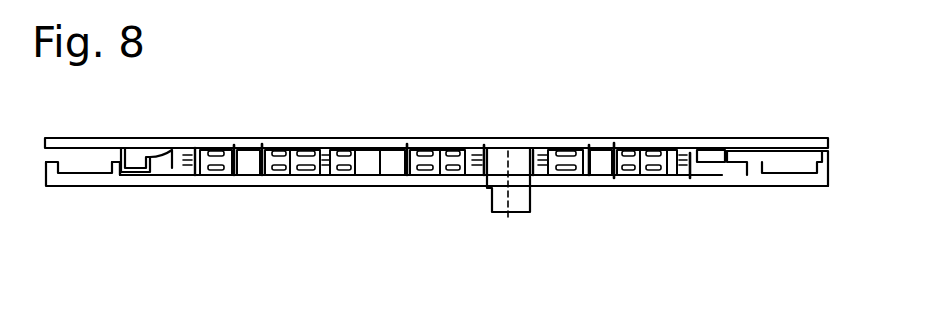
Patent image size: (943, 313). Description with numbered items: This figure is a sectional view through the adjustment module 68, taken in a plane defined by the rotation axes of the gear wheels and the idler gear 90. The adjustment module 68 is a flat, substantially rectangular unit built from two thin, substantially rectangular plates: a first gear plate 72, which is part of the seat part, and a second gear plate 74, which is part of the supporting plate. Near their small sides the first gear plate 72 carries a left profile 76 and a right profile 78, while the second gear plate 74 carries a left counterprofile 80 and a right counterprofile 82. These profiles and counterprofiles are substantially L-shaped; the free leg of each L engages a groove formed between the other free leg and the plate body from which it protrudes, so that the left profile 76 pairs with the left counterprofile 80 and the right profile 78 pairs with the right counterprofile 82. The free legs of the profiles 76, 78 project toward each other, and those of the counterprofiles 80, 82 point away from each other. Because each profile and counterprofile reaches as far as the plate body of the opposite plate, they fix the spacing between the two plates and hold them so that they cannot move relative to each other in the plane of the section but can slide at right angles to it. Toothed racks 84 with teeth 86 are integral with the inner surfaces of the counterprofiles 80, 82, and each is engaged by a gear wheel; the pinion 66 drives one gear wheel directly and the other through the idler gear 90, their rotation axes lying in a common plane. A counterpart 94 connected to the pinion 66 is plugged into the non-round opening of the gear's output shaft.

The pinion 66 is at (488, 138).
The adjustment module 68 is at (798, 90).
The first gear plate 72 is at (85, 177).
The second gear plate 74 is at (73, 139).
The left profile 76 is at (747, 155).
The right profile 78 is at (120, 160).
The left counterprofile 80 is at (710, 160).
The right counterprofile 82 is at (152, 156).
The toothed rack 84 is at (175, 152).
The teeth 86 is at (684, 174).
The idler gear 90 is at (368, 155).
The counterpart 94 is at (493, 193).